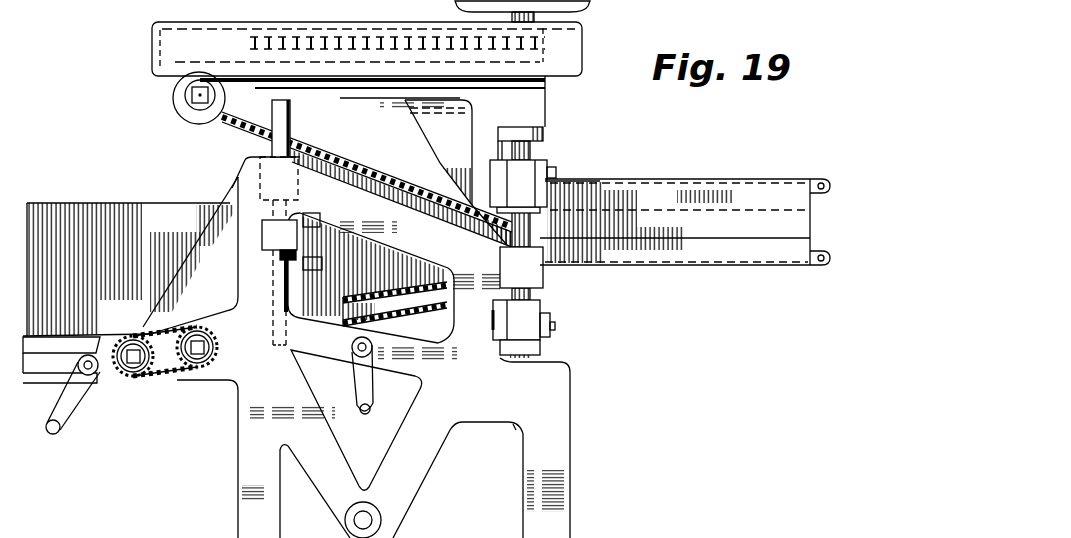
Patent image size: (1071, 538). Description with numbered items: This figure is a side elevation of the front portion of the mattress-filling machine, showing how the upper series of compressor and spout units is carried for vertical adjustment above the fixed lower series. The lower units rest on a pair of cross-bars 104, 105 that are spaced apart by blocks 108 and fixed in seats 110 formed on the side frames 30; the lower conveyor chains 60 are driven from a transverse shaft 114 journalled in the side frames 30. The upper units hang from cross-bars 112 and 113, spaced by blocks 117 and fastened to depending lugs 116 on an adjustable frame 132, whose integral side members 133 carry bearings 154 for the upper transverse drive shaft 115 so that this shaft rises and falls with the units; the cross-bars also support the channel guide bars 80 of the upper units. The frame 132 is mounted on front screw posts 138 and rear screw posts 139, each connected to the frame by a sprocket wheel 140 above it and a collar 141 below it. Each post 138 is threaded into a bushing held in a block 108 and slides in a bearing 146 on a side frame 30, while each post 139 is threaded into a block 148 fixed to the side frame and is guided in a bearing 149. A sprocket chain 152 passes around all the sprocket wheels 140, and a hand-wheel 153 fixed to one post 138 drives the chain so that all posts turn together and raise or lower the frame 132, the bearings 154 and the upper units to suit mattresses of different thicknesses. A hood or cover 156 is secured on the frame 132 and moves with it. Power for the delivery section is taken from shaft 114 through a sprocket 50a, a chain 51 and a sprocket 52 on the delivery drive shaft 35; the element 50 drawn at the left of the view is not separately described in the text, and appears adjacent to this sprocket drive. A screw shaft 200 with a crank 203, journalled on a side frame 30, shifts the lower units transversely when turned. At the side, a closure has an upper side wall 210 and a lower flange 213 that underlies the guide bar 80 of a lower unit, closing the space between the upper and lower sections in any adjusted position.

The side frame 30 is at (246, 465).
The drive shaft 35 is at (130, 364).
The hopper 50 is at (115, 213).
The sprocket 50a is at (180, 378).
The chain 51 is at (163, 372).
The sprocket 52 is at (147, 380).
The conveyor chain 60 is at (258, 134).
The guide bar 80 is at (316, 142).
The cross-bar 104 is at (497, 347).
The cross-bar 105 is at (548, 315).
The block 108 is at (527, 308).
The seat 110 is at (499, 328).
The cross-bar 112 is at (500, 176).
The cross-bar 113 is at (557, 169).
The transverse shaft 114 is at (206, 347).
The transverse drive shaft 115 is at (200, 104).
The depending lug 116 is at (480, 135).
The block 117 is at (548, 194).
The frame 132 is at (355, 94).
The side member 133 is at (548, 108).
The front screw post 138 is at (540, 148).
The rear screw post 139 is at (291, 129).
The sprocket wheel 140 is at (598, 40).
The collar 141 is at (542, 135).
The bearing 146 is at (532, 275).
The block 148 is at (284, 246).
The bearing 149 is at (298, 192).
The sprocket chain 152 is at (410, 23).
The hand-wheel 153 is at (590, 8).
The bearing 154 is at (186, 112).
The hood or cover 156 is at (156, 48).
The screw shaft 200 is at (353, 360).
The crank 203 is at (370, 392).
The side wall 210 is at (660, 179).
The flange 213 is at (700, 258).